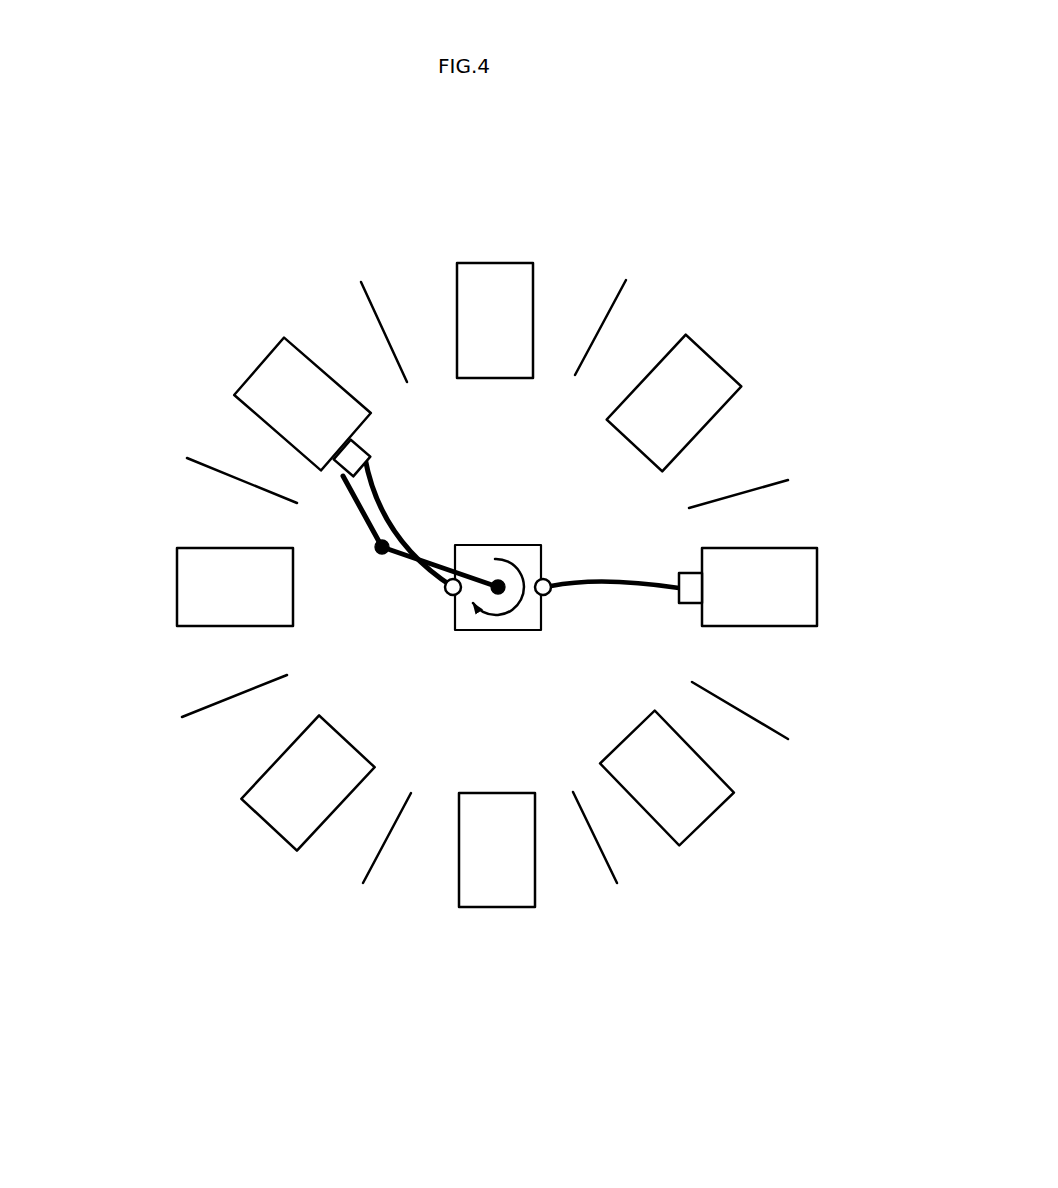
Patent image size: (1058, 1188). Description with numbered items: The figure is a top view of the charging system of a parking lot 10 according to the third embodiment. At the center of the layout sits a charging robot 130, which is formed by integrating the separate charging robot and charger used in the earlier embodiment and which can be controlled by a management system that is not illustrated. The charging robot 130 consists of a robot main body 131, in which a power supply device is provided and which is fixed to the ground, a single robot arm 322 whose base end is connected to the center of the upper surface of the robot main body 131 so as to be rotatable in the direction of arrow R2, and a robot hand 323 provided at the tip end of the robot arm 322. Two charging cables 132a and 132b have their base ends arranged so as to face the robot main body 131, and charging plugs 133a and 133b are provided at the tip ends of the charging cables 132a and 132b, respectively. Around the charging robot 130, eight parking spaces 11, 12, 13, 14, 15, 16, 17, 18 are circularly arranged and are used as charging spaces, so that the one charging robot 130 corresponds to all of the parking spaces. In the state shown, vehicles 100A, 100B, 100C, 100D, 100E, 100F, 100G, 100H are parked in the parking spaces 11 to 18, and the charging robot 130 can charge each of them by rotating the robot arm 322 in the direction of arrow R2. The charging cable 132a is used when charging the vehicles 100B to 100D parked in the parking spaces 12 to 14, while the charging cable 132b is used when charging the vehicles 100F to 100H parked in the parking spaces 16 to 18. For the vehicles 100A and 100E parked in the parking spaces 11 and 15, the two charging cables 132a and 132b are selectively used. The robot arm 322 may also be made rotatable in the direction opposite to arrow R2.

The parking lot 10 is at (245, 205).
The parking space 11 is at (410, 257).
The parking space 12 is at (223, 437).
The parking space 13 is at (198, 658).
The parking space 14 is at (342, 853).
The parking space 15 is at (562, 869).
The parking space 16 is at (748, 745).
The parking space 17 is at (788, 522).
The parking space 18 is at (657, 297).
The vehicle 100A is at (487, 262).
The vehicle 100B is at (258, 364).
The vehicle 100C is at (177, 584).
The vehicle 100D is at (262, 822).
The vehicle 100E is at (493, 907).
The vehicle 100F is at (712, 817).
The vehicle 100G is at (817, 587).
The vehicle 100H is at (713, 357).
The charging robot 130 is at (490, 637).
The robot main body 131 is at (533, 544).
The charging cable 132a is at (397, 517).
The charging cable 132b is at (605, 590).
The charging plug 133a is at (366, 447).
The charging plug 133b is at (690, 572).
The robot arm 322 is at (380, 548).
The robot hand 323 is at (335, 482).
The arrow (rotation direction) R2 is at (513, 618).